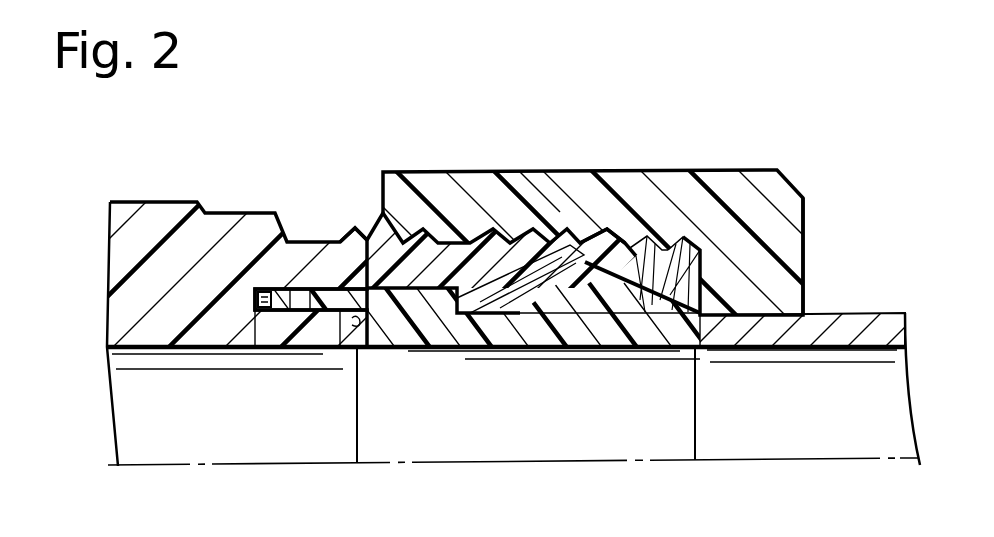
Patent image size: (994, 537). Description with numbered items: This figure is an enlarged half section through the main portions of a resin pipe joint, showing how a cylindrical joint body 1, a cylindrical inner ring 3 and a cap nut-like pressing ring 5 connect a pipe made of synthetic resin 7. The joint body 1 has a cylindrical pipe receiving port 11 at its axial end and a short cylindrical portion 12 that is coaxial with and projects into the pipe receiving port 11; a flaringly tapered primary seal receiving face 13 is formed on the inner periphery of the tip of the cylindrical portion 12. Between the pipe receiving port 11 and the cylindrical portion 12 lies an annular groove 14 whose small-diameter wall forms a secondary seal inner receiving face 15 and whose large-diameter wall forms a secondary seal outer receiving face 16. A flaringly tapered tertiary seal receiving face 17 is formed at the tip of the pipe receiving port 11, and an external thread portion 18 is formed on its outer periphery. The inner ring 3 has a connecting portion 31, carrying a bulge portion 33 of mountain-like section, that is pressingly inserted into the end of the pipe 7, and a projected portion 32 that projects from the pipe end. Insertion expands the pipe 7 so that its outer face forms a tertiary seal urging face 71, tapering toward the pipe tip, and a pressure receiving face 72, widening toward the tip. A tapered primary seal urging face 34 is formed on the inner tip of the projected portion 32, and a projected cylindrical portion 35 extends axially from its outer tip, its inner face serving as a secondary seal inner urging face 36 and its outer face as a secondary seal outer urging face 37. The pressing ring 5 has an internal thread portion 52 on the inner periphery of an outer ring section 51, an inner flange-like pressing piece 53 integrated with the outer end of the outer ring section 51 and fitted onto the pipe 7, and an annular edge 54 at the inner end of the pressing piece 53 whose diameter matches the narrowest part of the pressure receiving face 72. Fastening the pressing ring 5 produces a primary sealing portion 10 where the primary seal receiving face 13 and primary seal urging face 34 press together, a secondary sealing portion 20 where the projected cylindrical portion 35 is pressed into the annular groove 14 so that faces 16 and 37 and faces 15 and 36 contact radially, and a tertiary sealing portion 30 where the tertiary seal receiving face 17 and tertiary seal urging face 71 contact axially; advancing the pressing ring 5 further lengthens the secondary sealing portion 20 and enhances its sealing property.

The joint body 1 is at (124, 199).
The inner ring 3 is at (352, 426).
The pressing ring 5 is at (775, 167).
The pipe made of synthetic resin 7 is at (880, 308).
The primary sealing portion 10 is at (360, 348).
The pipe receiving port 11 is at (495, 250).
The cylindrical portion 12 is at (298, 347).
The primary seal receiving face 13 is at (385, 370).
The annular groove 14 is at (257, 300).
The secondary seal inner receiving face 15 is at (343, 340).
The secondary seal outer receiving face 16 is at (345, 245).
The tertiary seal receiving face 17 is at (606, 250).
The external thread portion 18 is at (422, 300).
The secondary sealing portion 20 is at (268, 285).
The tertiary sealing portion 30 is at (653, 333).
The connecting portion 31 is at (540, 345).
The projected portion 32 is at (410, 300).
The bulge portion 33 is at (608, 335).
The primary seal urging face 34 is at (356, 330).
The projected cylindrical portion 35 is at (312, 289).
The secondary seal inner urging face 36 is at (263, 347).
The secondary seal outer urging face 37 is at (302, 289).
The outer ring section 51 is at (545, 180).
The internal thread portion 52 is at (683, 300).
The inner flange-like pressing piece 53 is at (803, 238).
The annular edge 54 is at (713, 330).
The tertiary seal urging face 71 is at (582, 285).
The pressure receiving face 72 is at (677, 262).